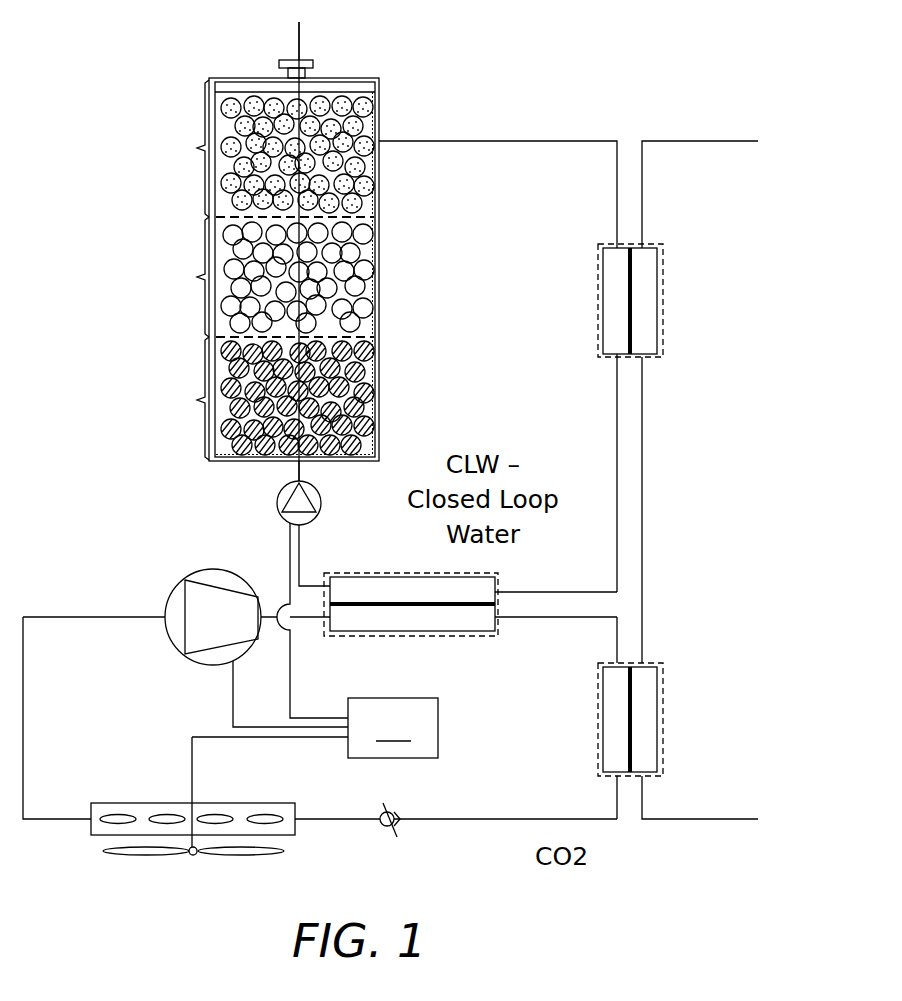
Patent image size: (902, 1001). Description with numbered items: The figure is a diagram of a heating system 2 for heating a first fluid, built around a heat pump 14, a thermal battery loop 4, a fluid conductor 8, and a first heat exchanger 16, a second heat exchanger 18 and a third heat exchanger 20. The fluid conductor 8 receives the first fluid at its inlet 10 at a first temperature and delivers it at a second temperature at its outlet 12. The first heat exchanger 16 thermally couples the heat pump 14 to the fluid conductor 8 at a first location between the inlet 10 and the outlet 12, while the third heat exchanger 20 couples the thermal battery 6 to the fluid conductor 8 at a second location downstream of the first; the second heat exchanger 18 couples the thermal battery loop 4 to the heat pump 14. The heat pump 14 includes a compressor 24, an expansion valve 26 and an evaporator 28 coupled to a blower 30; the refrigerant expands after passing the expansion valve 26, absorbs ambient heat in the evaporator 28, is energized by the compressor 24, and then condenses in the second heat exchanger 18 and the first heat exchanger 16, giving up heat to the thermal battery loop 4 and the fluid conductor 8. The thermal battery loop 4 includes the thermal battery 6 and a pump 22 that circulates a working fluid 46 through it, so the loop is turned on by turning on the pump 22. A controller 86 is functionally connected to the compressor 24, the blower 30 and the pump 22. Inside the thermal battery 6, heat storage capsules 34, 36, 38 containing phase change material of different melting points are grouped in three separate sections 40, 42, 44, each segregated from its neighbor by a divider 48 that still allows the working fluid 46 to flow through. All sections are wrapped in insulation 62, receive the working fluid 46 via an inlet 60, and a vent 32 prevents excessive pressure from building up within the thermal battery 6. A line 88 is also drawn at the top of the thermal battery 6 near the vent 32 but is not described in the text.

The heating system 2 is at (530, 905).
The thermal battery loop 4 is at (491, 142).
The thermal battery 6 is at (406, 358).
The fluid conductor 8 is at (643, 464).
The inlet 10 is at (703, 820).
The outlet 12 is at (715, 141).
The heat pump 14 is at (24, 680).
The first heat exchanger 16 is at (598, 718).
The second heat exchanger 18 is at (360, 640).
The third heat exchanger 20 is at (598, 302).
The pump 22 is at (278, 488).
The compressor 24 is at (192, 577).
The expansion valve 26 is at (392, 835).
The evaporator 28 is at (136, 803).
The blower 30 is at (132, 856).
The vent 32 is at (296, 60).
The heat storage capsules 34 is at (373, 406).
The heat storage capsules 36 is at (372, 290).
The heat storage capsules 38 is at (371, 100).
The section 40 is at (191, 414).
The section 42 is at (191, 291).
The section 44 is at (191, 162).
The working fluid 46 is at (354, 92).
The divider 48 is at (368, 215).
The inlet 60 is at (302, 462).
The insulation 62 is at (379, 232).
The controller 86 is at (393, 728).
The vent line 88 is at (300, 46).